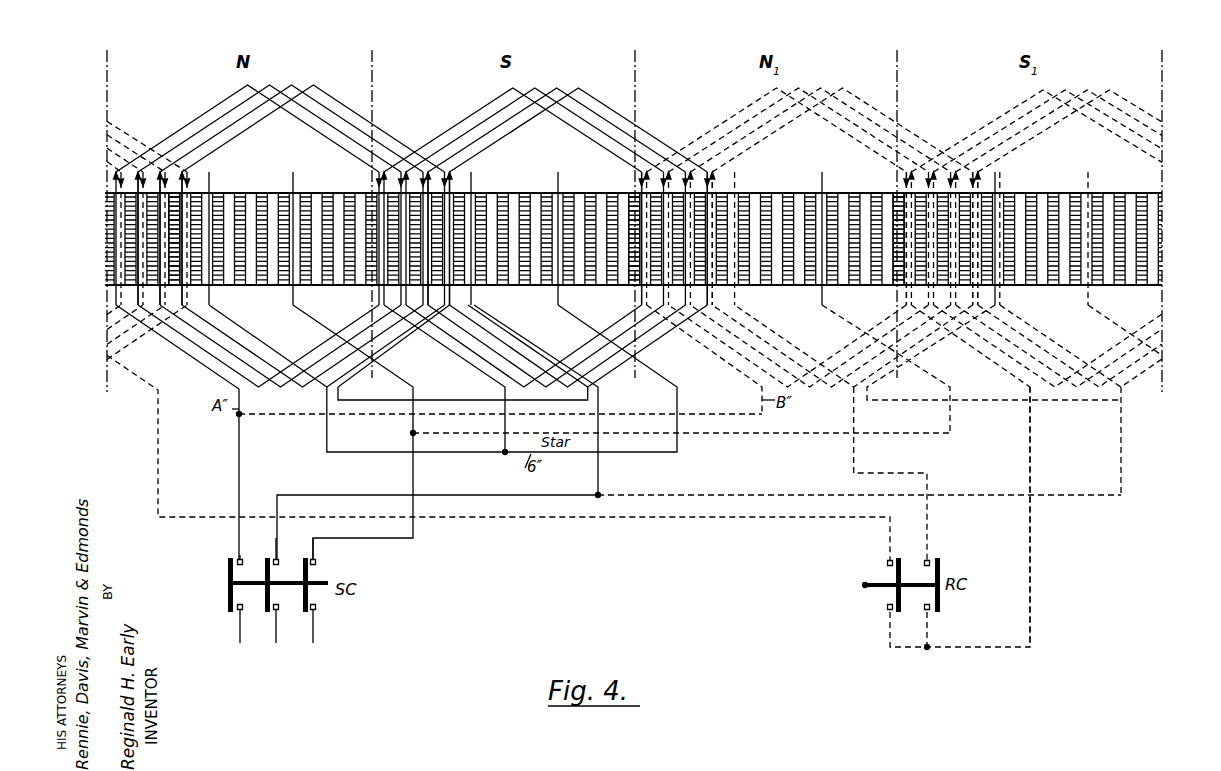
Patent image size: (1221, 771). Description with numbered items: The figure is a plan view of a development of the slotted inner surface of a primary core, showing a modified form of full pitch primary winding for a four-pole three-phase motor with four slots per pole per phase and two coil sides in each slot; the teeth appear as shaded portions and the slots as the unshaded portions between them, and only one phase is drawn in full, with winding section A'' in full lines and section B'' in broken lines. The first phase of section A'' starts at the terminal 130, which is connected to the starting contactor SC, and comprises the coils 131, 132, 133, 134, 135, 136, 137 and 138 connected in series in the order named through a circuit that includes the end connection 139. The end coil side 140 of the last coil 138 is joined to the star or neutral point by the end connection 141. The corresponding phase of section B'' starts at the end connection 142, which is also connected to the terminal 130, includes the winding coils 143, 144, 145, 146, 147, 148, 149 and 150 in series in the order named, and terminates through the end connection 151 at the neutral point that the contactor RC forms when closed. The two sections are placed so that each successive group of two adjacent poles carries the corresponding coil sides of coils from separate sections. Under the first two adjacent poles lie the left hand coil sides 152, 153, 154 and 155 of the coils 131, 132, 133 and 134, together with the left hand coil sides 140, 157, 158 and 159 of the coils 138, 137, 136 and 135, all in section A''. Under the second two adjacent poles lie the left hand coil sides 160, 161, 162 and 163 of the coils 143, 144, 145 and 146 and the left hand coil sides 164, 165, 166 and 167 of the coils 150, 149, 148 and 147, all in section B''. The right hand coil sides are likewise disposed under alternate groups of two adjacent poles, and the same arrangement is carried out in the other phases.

The terminal 130 is at (239, 453).
The coil 131 is at (246, 86).
The coil 132 is at (273, 86).
The coil 133 is at (297, 87).
The coil 134 is at (323, 89).
The coil 135 is at (585, 90).
The coil 136 is at (558, 89).
The coil 137 is at (535, 88).
The last coil 138 is at (513, 90).
The end connection 139 is at (440, 400).
The end coil side 140 is at (380, 188).
The end connection 141 is at (507, 424).
The end connection 142 is at (688, 414).
The winding coil 143 is at (780, 93).
The winding coil 144 is at (797, 93).
The winding coil 145 is at (820, 93).
The winding coil 146 is at (843, 93).
The winding coil 147 is at (1098, 98).
The winding coil 148 is at (1080, 98).
The winding coil 149 is at (1057, 97).
The winding coil 150 is at (1043, 93).
The end connection 151 is at (1030, 442).
The left hand coil side 152 is at (137, 198).
The left hand coil side 153 is at (160, 215).
The left hand coil side 154 is at (170, 228).
The left hand coil side 155 is at (182, 243).
The left hand coil side 157 is at (432, 186).
The left hand coil side 158 is at (455, 182).
The left hand coil side 159 is at (462, 196).
The left hand coil side 160 is at (633, 193).
The left hand coil side 161 is at (640, 187).
The left hand coil side 162 is at (707, 193).
The left hand coil side 163 is at (712, 212).
The left hand coil side 164 is at (904, 200).
The left hand coil side 165 is at (903, 200).
The left hand coil side 166 is at (973, 190).
The left hand coil side 167 is at (977, 210).